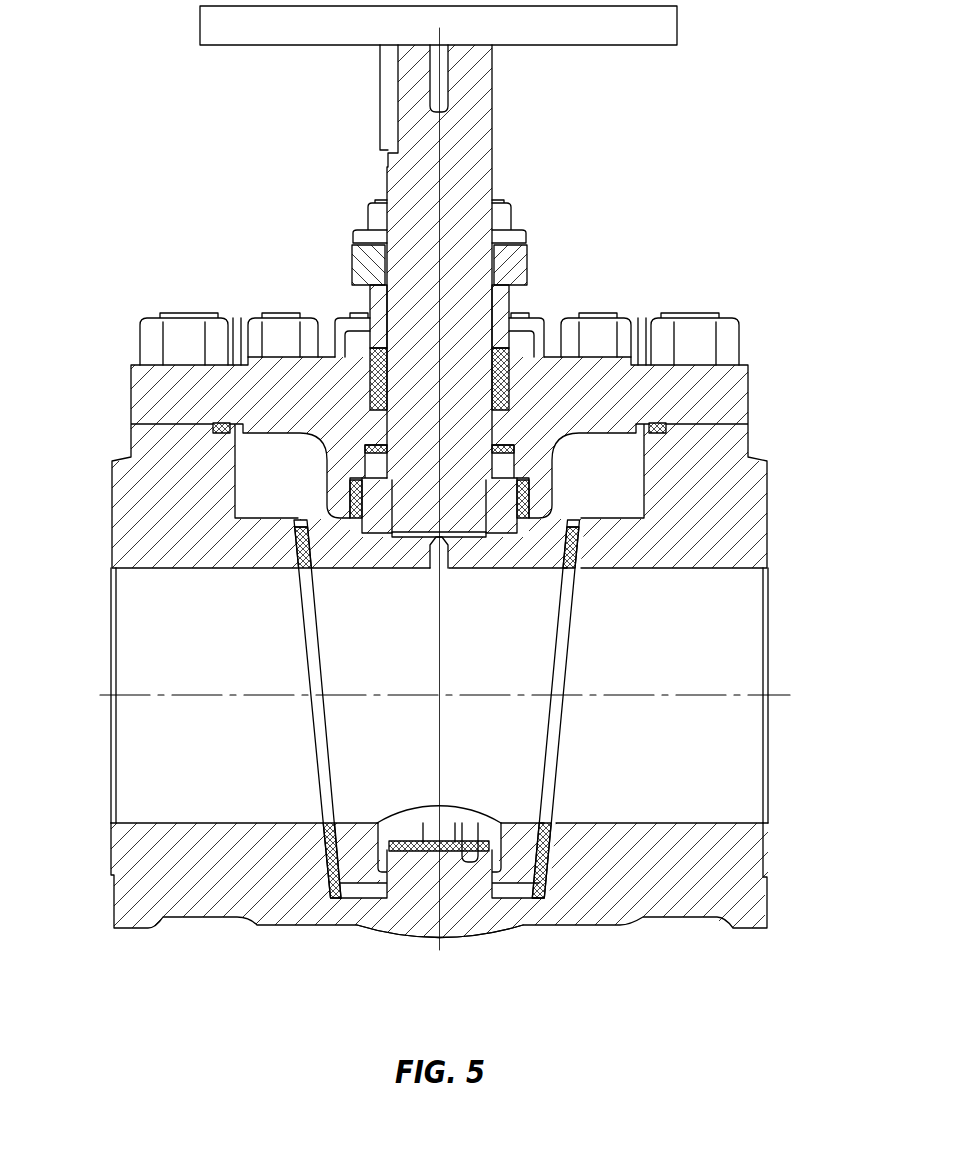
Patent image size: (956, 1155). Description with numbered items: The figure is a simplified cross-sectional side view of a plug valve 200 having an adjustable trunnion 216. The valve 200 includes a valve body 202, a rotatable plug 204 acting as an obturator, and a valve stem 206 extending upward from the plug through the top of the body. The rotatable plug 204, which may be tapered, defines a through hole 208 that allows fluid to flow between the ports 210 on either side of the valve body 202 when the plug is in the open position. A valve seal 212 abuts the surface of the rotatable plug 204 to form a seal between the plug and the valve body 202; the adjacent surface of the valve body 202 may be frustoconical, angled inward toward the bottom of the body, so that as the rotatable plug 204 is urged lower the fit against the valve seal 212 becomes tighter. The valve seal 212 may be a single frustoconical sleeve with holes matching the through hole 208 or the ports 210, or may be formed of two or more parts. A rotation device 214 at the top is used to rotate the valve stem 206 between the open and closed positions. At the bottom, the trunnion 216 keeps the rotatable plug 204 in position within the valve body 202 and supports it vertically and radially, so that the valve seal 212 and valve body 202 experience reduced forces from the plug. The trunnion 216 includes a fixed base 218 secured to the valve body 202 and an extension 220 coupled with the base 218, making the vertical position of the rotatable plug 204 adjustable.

The plug valve 200 is at (149, 168).
The valve body 202 is at (744, 522).
The rotatable plug 204 is at (521, 868).
The valve stem 206 is at (483, 123).
The through hole 208 is at (510, 773).
The ports 210 is at (768, 667).
The valve seal 212 is at (300, 577).
The rotation device 214 is at (661, 27).
The trunnion 216 is at (473, 948).
The fixed base 218 is at (423, 872).
The extension 220 is at (378, 874).